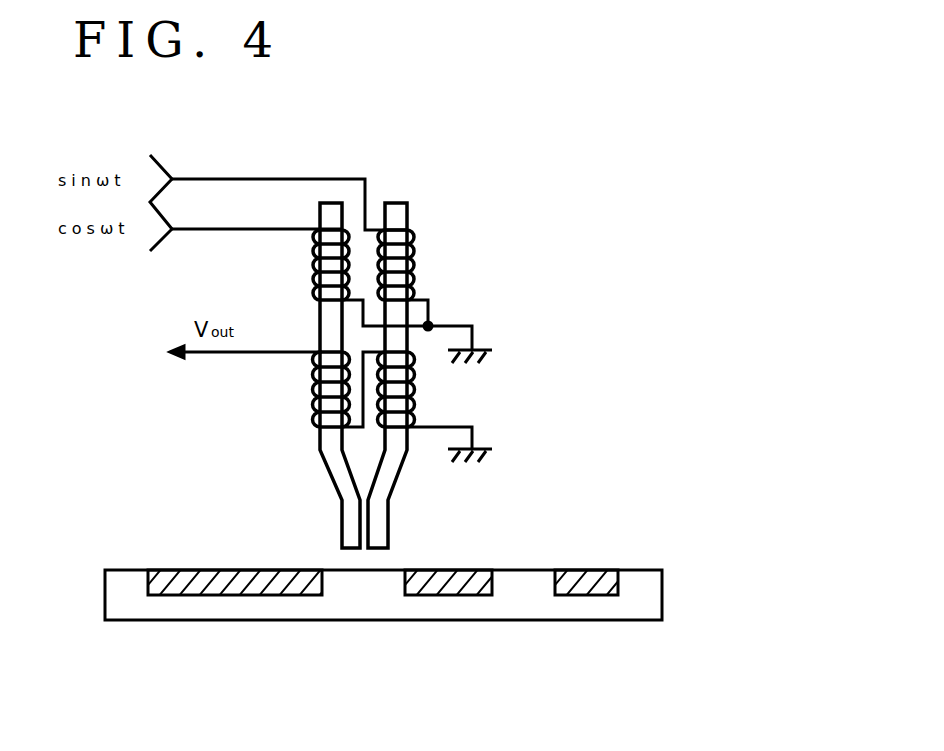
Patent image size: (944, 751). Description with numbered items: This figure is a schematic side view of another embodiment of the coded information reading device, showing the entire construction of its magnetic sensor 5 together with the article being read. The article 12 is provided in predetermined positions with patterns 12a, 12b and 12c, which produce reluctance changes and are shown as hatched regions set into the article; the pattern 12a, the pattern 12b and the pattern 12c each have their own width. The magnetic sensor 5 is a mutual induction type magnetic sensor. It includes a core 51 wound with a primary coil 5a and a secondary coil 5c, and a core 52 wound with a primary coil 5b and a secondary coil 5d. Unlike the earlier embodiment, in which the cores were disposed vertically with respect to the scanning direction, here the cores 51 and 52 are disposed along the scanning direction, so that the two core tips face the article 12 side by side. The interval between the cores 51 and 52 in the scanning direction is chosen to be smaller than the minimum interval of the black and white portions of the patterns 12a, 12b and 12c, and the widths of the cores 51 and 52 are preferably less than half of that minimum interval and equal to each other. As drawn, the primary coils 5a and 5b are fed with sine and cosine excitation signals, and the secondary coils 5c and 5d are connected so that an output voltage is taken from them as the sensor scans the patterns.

The magnetic sensor 5 is at (365, 157).
The core 51 is at (406, 202).
The core 52 is at (346, 202).
The primary coil 5a is at (414, 265).
The primary coil 5b is at (312, 265).
The secondary coil 5c is at (414, 389).
The secondary coil 5d is at (313, 389).
The article 12 is at (664, 597).
The pattern 12a is at (232, 596).
The pattern 12b is at (447, 597).
The pattern 12c is at (593, 597).